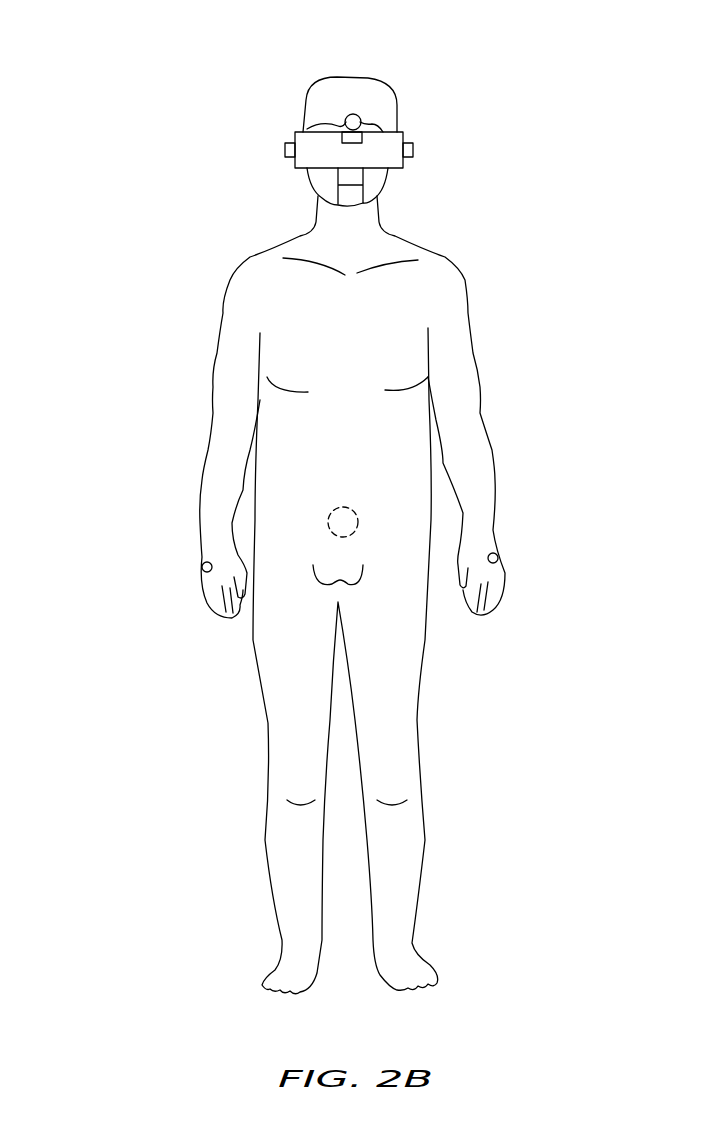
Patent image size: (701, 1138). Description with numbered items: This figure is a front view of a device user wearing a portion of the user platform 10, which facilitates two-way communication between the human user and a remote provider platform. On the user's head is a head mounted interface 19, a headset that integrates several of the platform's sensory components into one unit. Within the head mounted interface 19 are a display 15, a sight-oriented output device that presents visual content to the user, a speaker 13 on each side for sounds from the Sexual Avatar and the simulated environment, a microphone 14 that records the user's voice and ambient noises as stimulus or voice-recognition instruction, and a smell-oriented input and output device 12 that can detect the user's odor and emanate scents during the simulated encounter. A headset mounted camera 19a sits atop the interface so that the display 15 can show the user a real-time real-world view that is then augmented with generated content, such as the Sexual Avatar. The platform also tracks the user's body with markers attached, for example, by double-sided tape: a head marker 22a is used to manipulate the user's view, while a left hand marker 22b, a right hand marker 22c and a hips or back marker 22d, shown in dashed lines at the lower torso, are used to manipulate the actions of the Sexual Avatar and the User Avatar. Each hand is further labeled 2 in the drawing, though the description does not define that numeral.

The user platform 10 is at (110, 64).
The smell-oriented input and output device 12 is at (347, 173).
The speaker 13 is at (285, 152).
The microphone 14 is at (353, 192).
The display 15 is at (317, 158).
The head mounted interface 19 is at (418, 128).
The headset mounted camera 19a is at (337, 140).
The head marker 22a is at (352, 114).
The left hand marker 22b is at (202, 565).
The right hand marker 22c is at (498, 558).
The hips or back marker 22d is at (348, 505).
The hand 2 is at (212, 587).